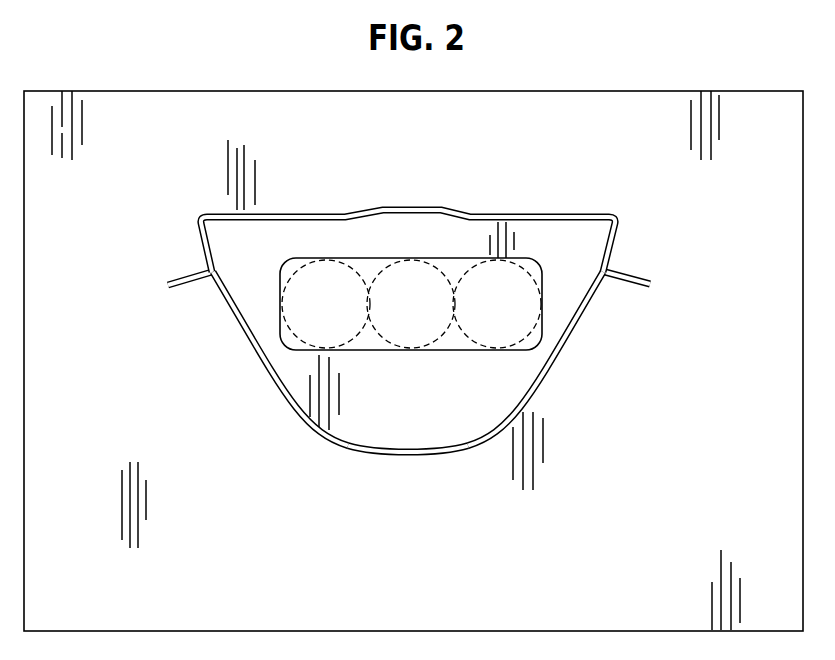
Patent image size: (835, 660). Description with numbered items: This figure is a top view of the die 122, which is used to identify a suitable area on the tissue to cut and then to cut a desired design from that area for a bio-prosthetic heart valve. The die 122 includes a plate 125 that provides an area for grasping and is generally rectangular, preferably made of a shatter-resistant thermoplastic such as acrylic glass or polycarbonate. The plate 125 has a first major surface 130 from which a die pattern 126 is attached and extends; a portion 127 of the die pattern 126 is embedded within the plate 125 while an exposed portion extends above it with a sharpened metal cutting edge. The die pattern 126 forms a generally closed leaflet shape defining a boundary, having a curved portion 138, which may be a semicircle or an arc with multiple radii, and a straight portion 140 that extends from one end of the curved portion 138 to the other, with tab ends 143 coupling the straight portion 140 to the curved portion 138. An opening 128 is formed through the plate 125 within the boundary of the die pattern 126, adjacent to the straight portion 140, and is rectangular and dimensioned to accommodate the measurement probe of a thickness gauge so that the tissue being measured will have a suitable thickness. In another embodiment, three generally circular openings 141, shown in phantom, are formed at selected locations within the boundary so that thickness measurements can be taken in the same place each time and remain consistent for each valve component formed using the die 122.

The die 122 is at (657, 108).
The plate 125 is at (175, 118).
The die pattern 126 is at (410, 179).
The portion 127 is at (440, 392).
The opening 128 is at (453, 258).
The first major surface 130 is at (439, 274).
The curved portion 138 is at (418, 455).
The straight portion 140 is at (430, 212).
The openings 141 is at (312, 258).
The tab ends 143 is at (621, 252).